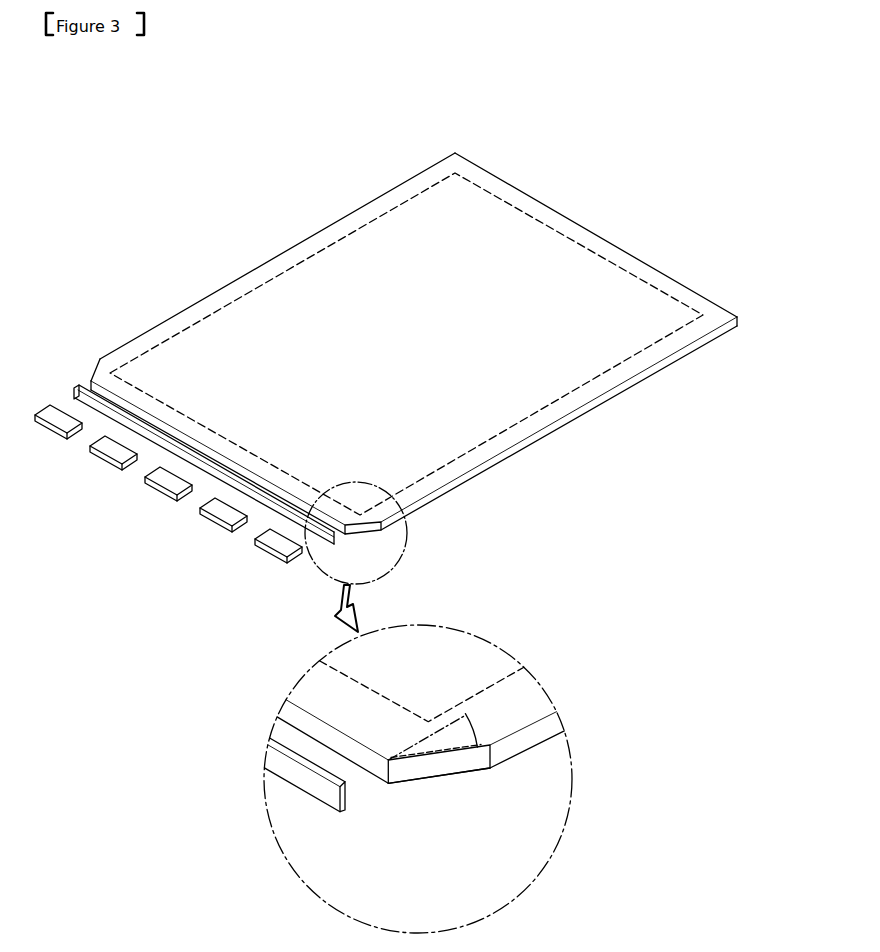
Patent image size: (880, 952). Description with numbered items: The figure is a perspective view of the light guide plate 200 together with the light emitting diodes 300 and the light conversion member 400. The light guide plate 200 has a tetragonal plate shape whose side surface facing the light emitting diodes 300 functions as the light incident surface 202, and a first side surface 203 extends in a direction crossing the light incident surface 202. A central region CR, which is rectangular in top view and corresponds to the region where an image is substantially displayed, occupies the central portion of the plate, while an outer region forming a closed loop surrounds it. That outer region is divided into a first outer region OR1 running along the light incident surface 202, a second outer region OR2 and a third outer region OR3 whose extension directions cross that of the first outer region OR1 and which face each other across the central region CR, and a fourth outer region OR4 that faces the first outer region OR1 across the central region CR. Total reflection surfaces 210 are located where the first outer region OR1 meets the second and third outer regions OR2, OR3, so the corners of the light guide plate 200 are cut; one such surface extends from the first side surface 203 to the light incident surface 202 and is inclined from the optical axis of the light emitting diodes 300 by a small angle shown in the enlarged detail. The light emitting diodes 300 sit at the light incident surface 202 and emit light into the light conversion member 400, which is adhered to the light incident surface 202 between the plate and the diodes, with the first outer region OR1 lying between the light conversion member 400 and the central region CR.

The light guide plate 200 is at (414, 450).
The central region CR is at (362, 248).
The first outer region OR1 is at (183, 420).
The second outer region OR2 is at (480, 457).
The third outer region OR3 is at (255, 280).
The fourth outer region OR4 is at (587, 240).
The light incident surface 202 is at (222, 460).
The first side surface 203 is at (575, 413).
The total reflection surfaces 210 is at (463, 768).
The light emitting diodes 300 is at (267, 552).
The light conversion member 400 is at (78, 387).